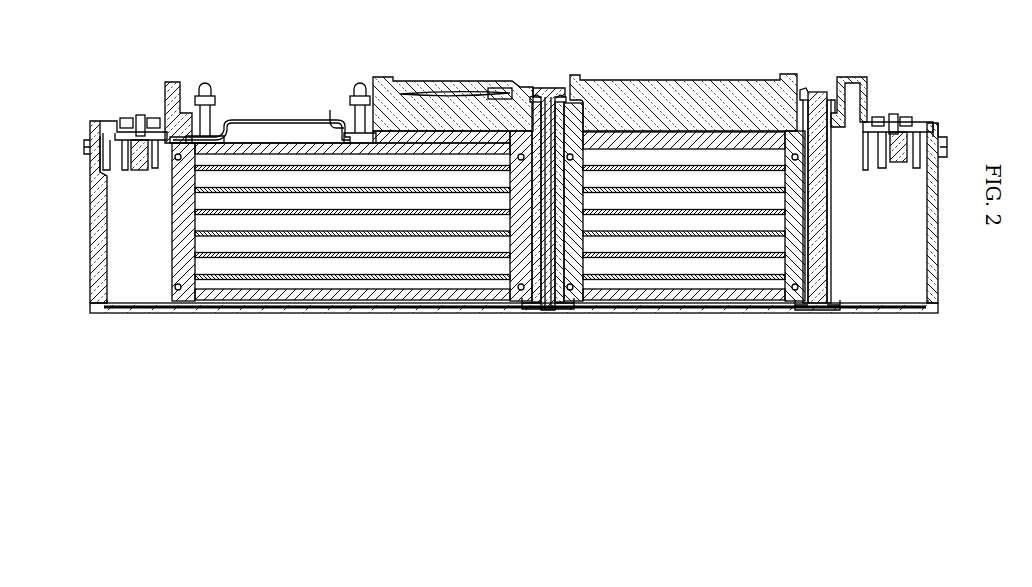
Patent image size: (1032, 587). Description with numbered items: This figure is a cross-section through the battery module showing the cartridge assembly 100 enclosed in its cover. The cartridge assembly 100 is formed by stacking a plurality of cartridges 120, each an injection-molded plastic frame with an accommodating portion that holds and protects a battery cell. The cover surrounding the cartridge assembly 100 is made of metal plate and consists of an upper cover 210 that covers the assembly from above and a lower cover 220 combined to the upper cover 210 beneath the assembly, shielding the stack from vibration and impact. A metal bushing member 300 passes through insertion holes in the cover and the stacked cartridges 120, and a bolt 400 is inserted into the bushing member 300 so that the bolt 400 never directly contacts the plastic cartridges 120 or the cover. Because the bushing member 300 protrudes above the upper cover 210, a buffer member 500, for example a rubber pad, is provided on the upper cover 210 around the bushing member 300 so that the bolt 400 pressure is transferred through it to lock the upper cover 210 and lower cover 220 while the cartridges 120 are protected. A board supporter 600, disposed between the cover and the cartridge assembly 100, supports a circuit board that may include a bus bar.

The cartridge assembly 100 is at (178, 216).
The cartridge 120 is at (259, 160).
The upper cover 210 is at (636, 77).
The lower cover 220 is at (639, 314).
The bushing member 300 is at (535, 113).
The bolt 400 is at (547, 90).
The buffer member 500 is at (563, 98).
The board supporter 600 is at (534, 135).